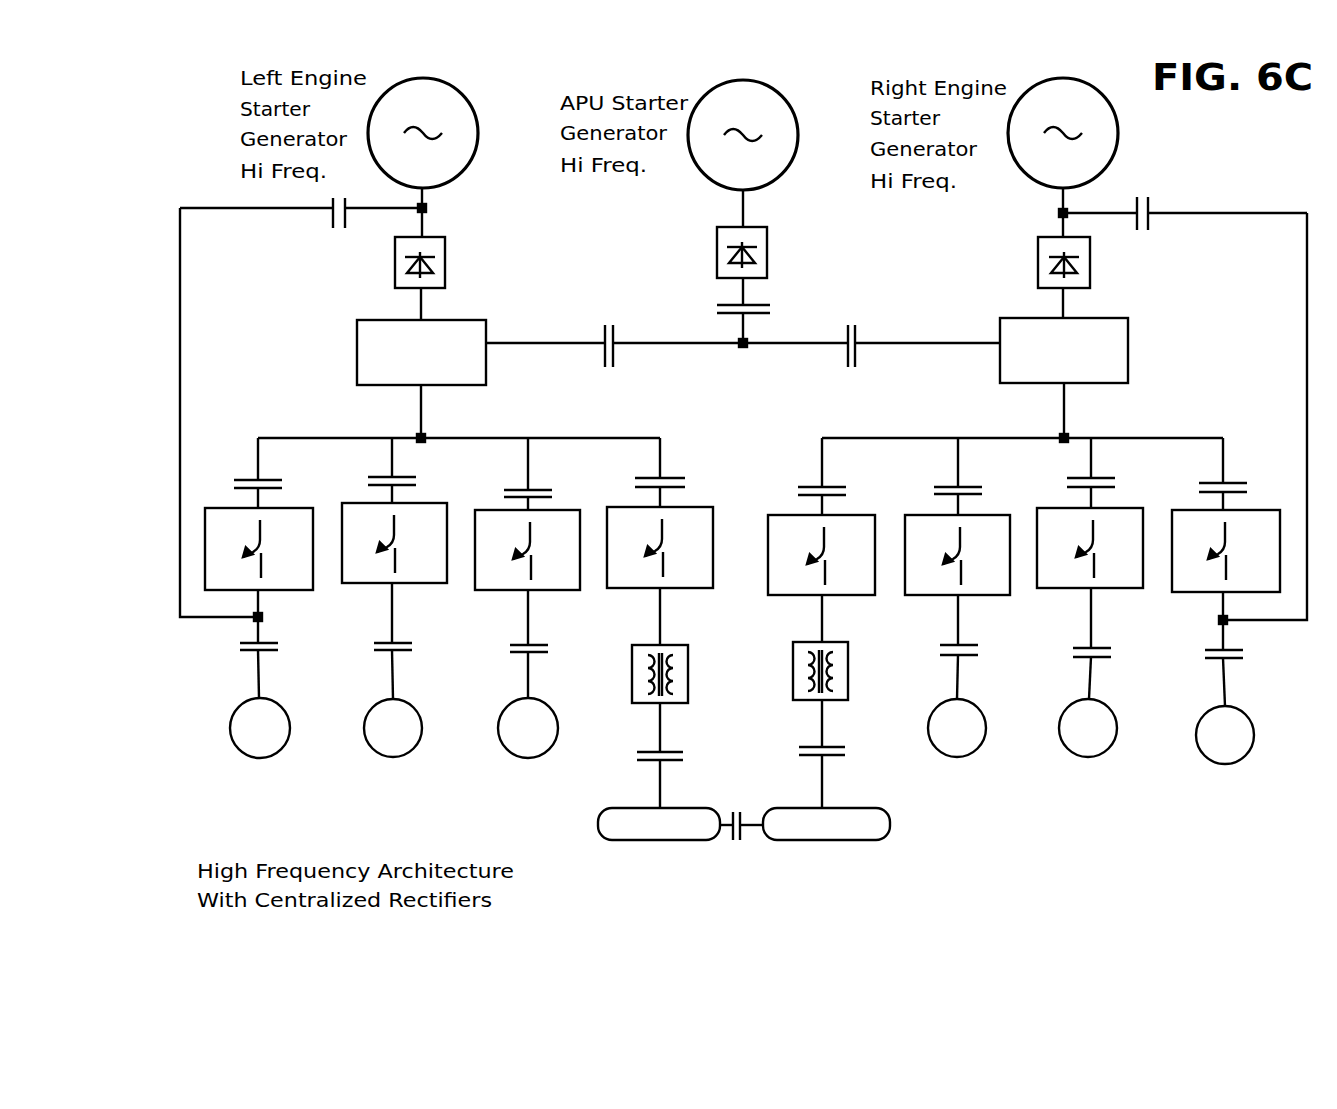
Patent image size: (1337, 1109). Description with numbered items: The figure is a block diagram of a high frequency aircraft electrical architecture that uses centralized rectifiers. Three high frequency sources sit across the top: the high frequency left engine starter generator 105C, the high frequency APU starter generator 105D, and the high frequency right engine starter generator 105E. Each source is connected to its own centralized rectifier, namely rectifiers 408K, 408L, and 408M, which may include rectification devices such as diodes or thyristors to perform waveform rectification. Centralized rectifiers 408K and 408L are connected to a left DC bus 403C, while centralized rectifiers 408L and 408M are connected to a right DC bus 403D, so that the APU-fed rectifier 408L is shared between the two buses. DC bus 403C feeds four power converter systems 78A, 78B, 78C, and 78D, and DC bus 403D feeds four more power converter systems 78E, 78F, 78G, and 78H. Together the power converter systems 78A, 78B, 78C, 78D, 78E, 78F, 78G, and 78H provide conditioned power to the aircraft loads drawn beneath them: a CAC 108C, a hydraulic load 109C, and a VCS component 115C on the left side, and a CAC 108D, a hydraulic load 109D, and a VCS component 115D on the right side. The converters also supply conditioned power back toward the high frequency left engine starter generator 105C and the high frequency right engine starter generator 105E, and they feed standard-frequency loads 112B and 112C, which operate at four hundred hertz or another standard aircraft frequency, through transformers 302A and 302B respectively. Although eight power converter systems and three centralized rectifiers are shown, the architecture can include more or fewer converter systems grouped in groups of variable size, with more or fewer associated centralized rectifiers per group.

The high frequency left engine starter generator 105C is at (423, 78).
The high frequency APU starter generator 105D is at (743, 80).
The high frequency right engine starter generator 105E is at (1063, 78).
The centralized rectifier 408K is at (448, 262).
The centralized rectifier 408L is at (767, 252).
The centralized rectifier 408M is at (1090, 262).
The DC bus 403C is at (357, 350).
The DC bus 403D is at (1128, 350).
The power converter system 78A is at (213, 508).
The power converter system 78B is at (349, 503).
The power converter system 78C is at (484, 510).
The power converter system 78D is at (612, 507).
The power converter system 78E is at (773, 515).
The power converter system 78F is at (912, 515).
The power converter system 78G is at (1040, 508).
The power converter system 78H is at (1178, 510).
The transformer 302A is at (688, 660).
The transformer 302B is at (793, 687).
The CAC 108C is at (230, 728).
The CAC 108D is at (1254, 735).
The hydraulic load 109C is at (422, 730).
The hydraulic load 109D is at (1117, 735).
The VCS component 115C is at (558, 728).
The VCS component 115D is at (986, 733).
The 400 Hz load 112B is at (660, 840).
The 400 Hz load 112C is at (824, 840).